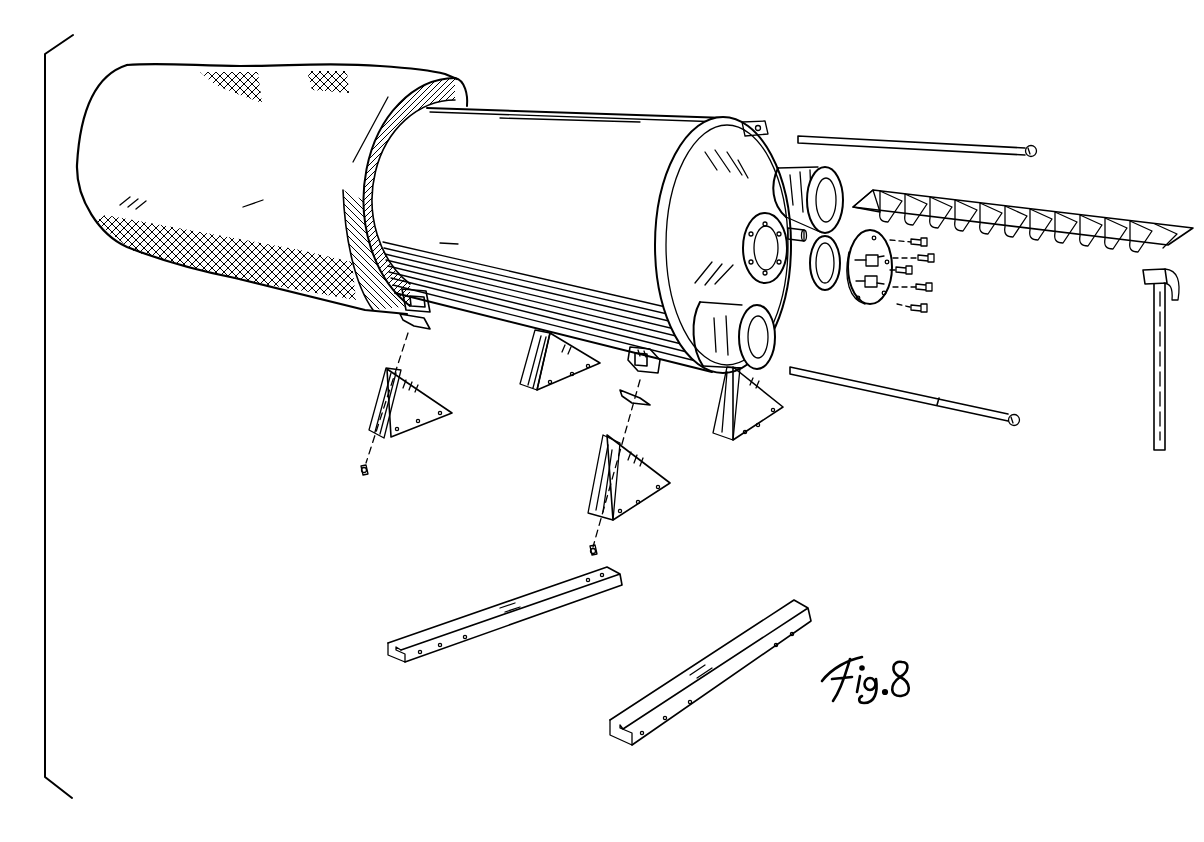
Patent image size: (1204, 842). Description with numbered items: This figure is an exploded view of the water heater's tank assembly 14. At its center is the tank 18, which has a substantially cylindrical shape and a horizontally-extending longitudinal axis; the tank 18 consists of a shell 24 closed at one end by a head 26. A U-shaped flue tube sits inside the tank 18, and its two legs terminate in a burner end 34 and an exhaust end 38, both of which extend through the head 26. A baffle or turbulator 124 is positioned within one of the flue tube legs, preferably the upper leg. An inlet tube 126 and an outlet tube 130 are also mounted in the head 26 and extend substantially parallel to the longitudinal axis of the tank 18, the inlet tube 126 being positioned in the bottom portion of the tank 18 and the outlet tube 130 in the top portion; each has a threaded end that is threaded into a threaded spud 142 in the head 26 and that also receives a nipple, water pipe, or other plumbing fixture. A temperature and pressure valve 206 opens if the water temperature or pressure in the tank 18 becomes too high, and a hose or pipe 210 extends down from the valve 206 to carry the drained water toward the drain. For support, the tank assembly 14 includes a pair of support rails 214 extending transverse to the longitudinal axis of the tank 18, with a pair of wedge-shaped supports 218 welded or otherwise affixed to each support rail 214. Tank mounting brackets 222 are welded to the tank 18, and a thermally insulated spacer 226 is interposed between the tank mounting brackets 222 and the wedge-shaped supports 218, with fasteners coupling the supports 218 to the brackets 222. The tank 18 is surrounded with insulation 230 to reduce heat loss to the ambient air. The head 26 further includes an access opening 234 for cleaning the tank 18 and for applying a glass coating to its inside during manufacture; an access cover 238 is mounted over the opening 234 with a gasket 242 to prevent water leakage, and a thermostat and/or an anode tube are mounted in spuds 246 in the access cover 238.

The tank assembly 14 is at (569, 104).
The tank 18 is at (631, 140).
The shell 24 is at (514, 207).
The head 26 is at (668, 212).
The burner end 34 is at (765, 330).
The exhaust end 38 is at (832, 190).
The baffle or turbulator 124 is at (1100, 215).
The inlet tube 126 is at (937, 399).
The outlet tube 130 is at (987, 147).
The threaded spud 142 is at (752, 120).
The temperature and pressure valve 206 is at (1143, 281).
The hose or pipe 210 is at (1157, 348).
The support rails 214 is at (500, 620).
The wedge-shaped supports 218 is at (557, 390).
The tank mounting brackets 222 is at (377, 313).
The thermally insulated spacer 226 is at (421, 326).
The insulation 230 is at (250, 288).
The access opening 234 is at (762, 256).
The access cover 238 is at (897, 262).
The gasket 242 is at (817, 291).
The spuds 246 is at (873, 279).